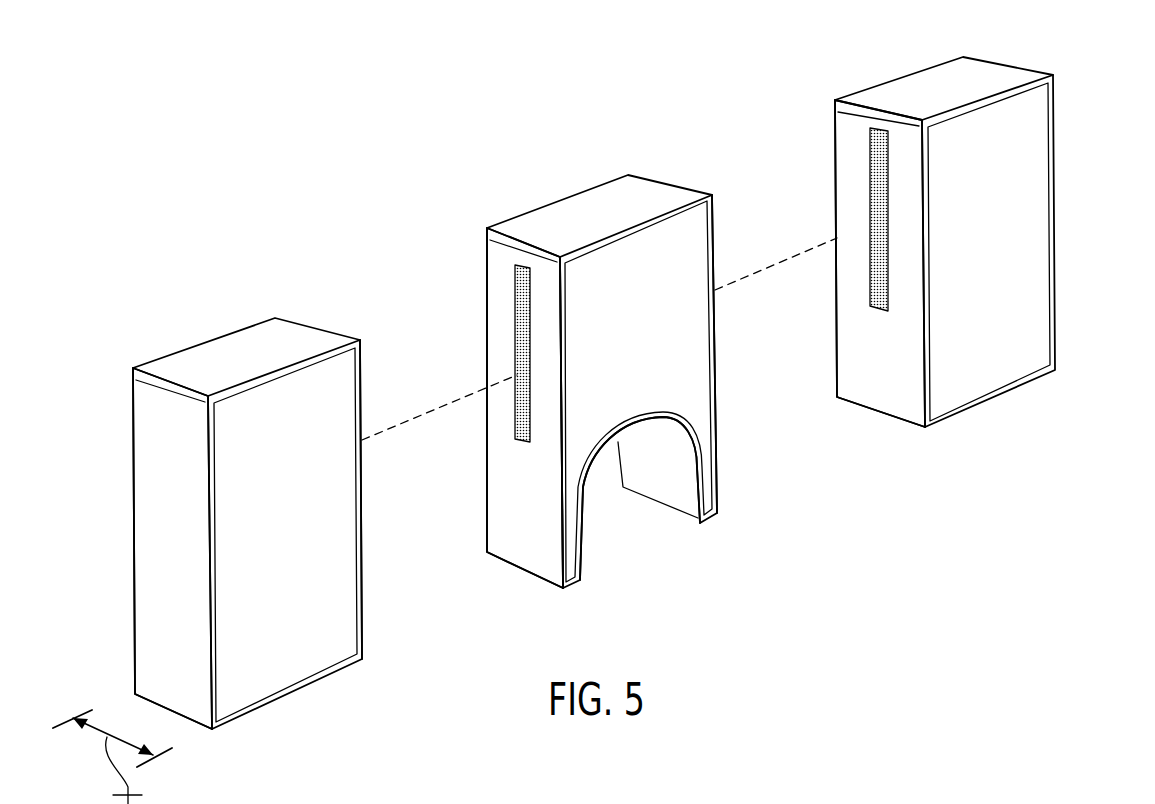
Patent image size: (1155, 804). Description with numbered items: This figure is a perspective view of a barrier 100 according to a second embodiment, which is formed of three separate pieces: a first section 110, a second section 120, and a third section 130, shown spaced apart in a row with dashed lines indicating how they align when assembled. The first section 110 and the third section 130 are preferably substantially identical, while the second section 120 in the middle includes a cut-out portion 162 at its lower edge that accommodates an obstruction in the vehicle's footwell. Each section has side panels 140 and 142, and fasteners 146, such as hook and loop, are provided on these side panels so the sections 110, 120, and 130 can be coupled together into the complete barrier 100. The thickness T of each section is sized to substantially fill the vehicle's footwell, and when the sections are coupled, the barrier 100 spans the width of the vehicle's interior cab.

The barrier 100 is at (259, 92).
The first section 110 is at (279, 681).
The second section 120 is at (594, 211).
The third section 130 is at (1016, 314).
The side panel 140 is at (497, 262).
The side panel 142 is at (362, 383).
The fastener 146 is at (513, 412).
The cut-out portion 162 is at (682, 502).